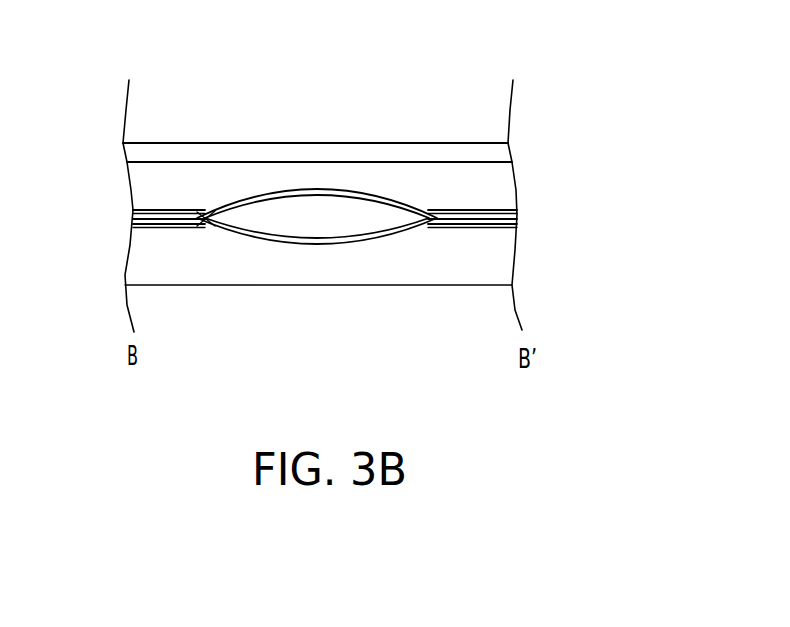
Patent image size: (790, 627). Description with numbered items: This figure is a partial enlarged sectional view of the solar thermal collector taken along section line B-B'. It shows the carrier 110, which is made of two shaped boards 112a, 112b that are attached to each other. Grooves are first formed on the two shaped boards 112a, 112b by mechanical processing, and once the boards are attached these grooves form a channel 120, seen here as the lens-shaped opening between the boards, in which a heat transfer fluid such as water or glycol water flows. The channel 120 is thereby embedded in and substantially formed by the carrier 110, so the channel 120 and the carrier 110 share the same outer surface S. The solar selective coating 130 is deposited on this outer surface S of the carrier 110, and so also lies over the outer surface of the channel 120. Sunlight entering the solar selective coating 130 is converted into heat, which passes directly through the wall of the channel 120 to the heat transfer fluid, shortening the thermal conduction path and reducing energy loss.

The outer surface S is at (197, 162).
The solar selective coating 130 is at (452, 152).
The carrier 110 is at (622, 172).
The shaped board 112a is at (500, 191).
The shaped board 112b is at (498, 258).
The channel 120 is at (273, 218).